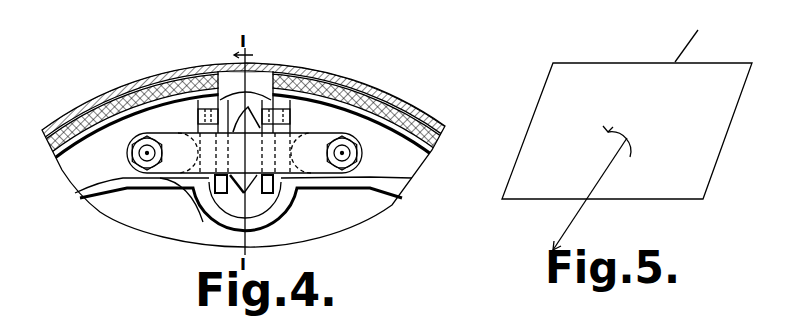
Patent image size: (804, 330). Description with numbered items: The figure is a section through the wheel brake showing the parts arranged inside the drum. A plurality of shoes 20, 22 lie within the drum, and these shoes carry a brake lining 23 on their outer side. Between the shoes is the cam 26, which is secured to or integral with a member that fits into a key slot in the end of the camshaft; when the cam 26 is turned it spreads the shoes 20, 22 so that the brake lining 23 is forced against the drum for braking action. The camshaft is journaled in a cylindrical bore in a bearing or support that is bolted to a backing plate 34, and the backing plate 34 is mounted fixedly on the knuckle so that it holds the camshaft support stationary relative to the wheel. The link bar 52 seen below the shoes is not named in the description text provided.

The shoe 20 is at (177, 110).
The shoe 22 is at (322, 85).
The brake lining 23 is at (367, 87).
The cam 26 is at (274, 93).
The backing plate 34 is at (398, 98).
The link bar 52 is at (178, 163).